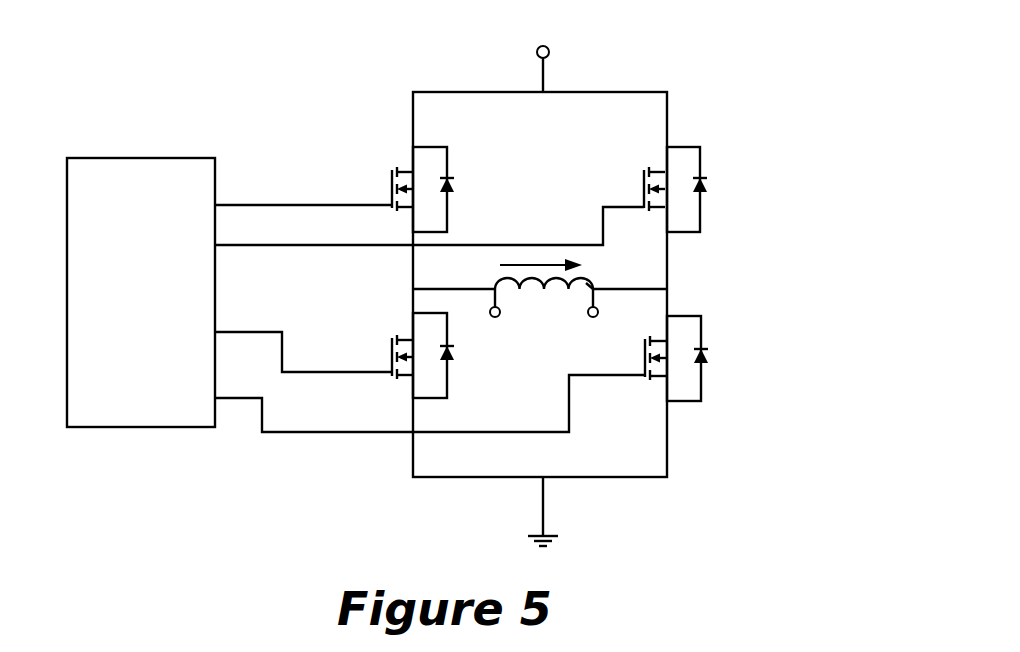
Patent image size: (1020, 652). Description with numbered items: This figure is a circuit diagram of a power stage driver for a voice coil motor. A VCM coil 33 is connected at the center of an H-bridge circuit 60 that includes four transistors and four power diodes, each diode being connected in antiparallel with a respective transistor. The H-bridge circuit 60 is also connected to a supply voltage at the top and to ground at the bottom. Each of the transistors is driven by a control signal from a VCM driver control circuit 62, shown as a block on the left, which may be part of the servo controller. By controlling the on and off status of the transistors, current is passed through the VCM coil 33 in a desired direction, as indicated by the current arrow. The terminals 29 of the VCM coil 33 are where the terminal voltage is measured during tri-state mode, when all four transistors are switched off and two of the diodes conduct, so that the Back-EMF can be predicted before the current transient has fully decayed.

The H-bridge circuit 60 is at (700, 112).
The VCM driver control circuit 62 is at (128, 355).
The terminals 29 is at (588, 318).
The VCM coil 33 is at (590, 281).